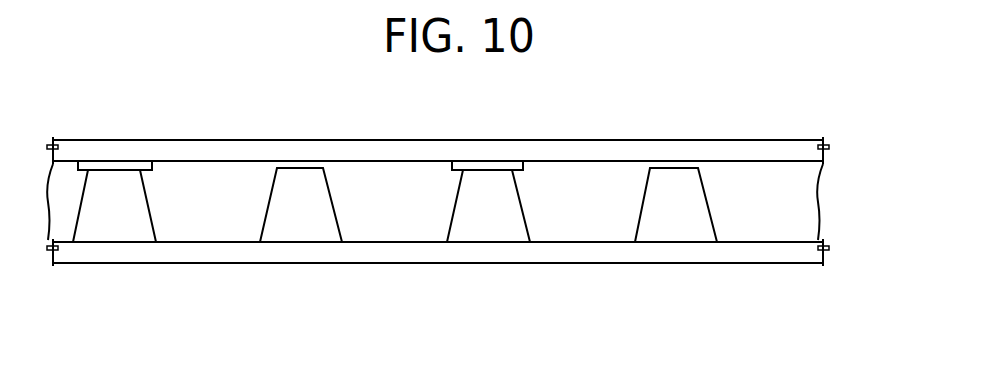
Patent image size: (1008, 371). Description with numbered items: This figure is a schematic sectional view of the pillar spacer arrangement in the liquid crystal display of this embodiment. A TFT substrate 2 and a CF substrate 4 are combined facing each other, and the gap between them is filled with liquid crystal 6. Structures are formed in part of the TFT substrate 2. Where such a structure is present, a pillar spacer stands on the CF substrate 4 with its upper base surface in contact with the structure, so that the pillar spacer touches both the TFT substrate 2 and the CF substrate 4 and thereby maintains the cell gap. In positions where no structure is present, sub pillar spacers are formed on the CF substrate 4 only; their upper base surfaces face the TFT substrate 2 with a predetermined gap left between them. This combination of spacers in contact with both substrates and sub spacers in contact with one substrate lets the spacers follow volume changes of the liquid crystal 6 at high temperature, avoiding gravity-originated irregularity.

The TFT substrate 2 is at (812, 149).
The CF substrate 4 is at (812, 252).
The liquid crystal 6 is at (812, 204).